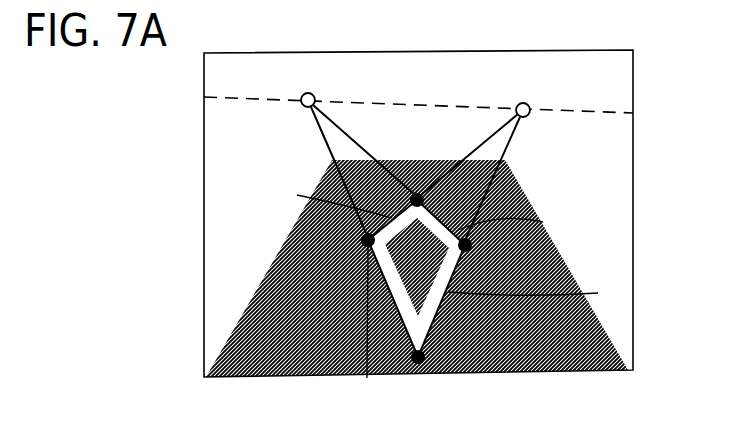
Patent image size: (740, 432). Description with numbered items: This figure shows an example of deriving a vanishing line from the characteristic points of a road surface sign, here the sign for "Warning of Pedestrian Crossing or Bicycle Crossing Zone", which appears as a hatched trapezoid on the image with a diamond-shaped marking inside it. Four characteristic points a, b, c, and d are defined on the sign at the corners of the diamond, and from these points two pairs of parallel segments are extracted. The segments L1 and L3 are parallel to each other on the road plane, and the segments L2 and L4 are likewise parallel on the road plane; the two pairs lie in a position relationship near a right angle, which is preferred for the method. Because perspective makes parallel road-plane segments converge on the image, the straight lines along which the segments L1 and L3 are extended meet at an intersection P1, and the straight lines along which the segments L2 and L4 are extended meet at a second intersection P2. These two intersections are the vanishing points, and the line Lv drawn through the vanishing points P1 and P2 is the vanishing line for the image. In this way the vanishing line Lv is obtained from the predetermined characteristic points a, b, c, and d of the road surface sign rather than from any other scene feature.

The intersection of extended segments L1 and L3 P1 is at (518, 103).
The intersection of extended segments L2 and L4 P2 is at (301, 105).
The vanishing line Lv is at (568, 110).
The segment L1 is at (538, 293).
The segment L2 is at (543, 222).
The segment L3 is at (327, 192).
The segment L4 is at (367, 378).
The characteristic point a is at (419, 364).
The characteristic point b is at (472, 245).
The characteristic point c is at (424, 200).
The characteristic point d is at (361, 240).